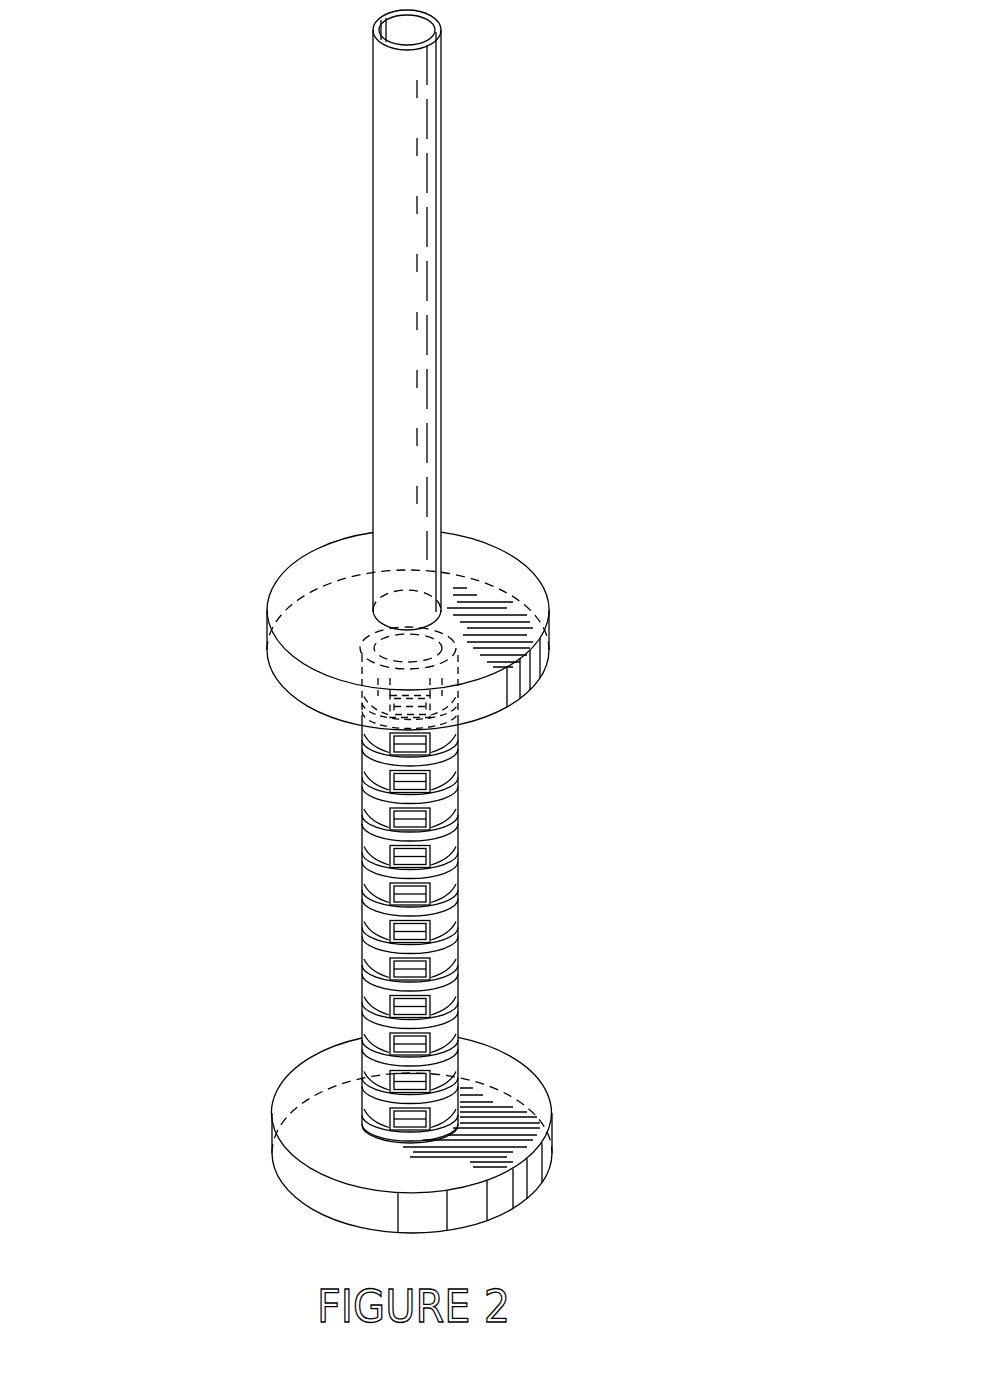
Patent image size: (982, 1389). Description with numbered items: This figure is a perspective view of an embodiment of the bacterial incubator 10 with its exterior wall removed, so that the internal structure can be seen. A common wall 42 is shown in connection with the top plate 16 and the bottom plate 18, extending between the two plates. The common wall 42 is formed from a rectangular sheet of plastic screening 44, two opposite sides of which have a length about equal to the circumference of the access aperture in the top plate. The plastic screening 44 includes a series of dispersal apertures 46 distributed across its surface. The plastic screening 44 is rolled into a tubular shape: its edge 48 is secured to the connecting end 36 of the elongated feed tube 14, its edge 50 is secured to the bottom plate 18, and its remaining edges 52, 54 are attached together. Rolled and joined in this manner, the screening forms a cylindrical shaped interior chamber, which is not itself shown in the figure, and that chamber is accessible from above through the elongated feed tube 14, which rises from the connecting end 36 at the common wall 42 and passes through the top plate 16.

The bacterial incubator 10 is at (662, 822).
The elongated feed tube 14 is at (441, 432).
The top plate 16 is at (308, 686).
The bottom plate 18 is at (522, 1183).
The connecting end 36 is at (414, 592).
The common wall 42 is at (458, 977).
The plastic screening 44 is at (458, 908).
The dispersal apertures 46 is at (458, 806).
The edge 48 is at (455, 672).
The edge 50 is at (372, 1137).
The edge 52 is at (458, 1062).
The edge 54 is at (372, 1062).